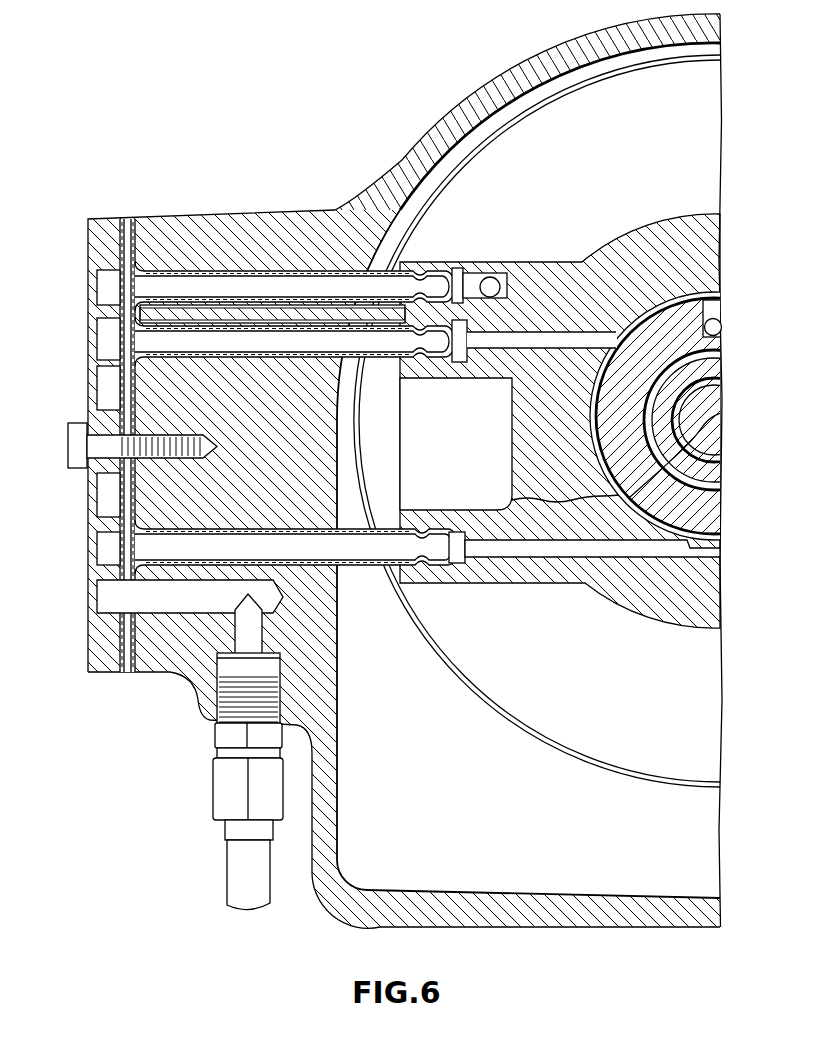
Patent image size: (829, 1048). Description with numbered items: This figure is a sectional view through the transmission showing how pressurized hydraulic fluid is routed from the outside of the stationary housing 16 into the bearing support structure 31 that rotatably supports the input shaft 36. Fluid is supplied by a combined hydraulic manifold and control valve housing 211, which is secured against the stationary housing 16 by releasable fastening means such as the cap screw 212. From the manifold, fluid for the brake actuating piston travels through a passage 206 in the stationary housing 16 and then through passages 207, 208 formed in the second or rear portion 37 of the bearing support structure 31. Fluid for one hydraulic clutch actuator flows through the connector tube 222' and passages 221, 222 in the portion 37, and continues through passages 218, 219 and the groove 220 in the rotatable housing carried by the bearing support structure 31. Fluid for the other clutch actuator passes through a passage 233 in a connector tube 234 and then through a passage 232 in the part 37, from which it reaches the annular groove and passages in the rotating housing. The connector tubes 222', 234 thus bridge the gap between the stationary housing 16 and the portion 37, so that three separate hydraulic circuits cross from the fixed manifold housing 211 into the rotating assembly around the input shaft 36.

The stationary housing 16 is at (472, 94).
The bearing support structure 31 is at (498, 711).
The second or rear portion of the bearing support structure 37 is at (560, 727).
The input shaft 36 is at (722, 402).
The passage 206 is at (303, 284).
The passage 207 is at (474, 282).
The passage 208 is at (497, 280).
The combined hydraulic manifold and control valve housing 211 is at (104, 219).
The cap screw 212 is at (82, 424).
The passage 218 is at (723, 326).
The passage 219 is at (725, 309).
The groove 220 is at (662, 310).
The passage 221 is at (513, 345).
The passage 222 is at (295, 368).
The connector tube 222' is at (272, 351).
The passage 232 is at (529, 554).
The passage 233 is at (372, 552).
The connector tube 234 is at (353, 566).